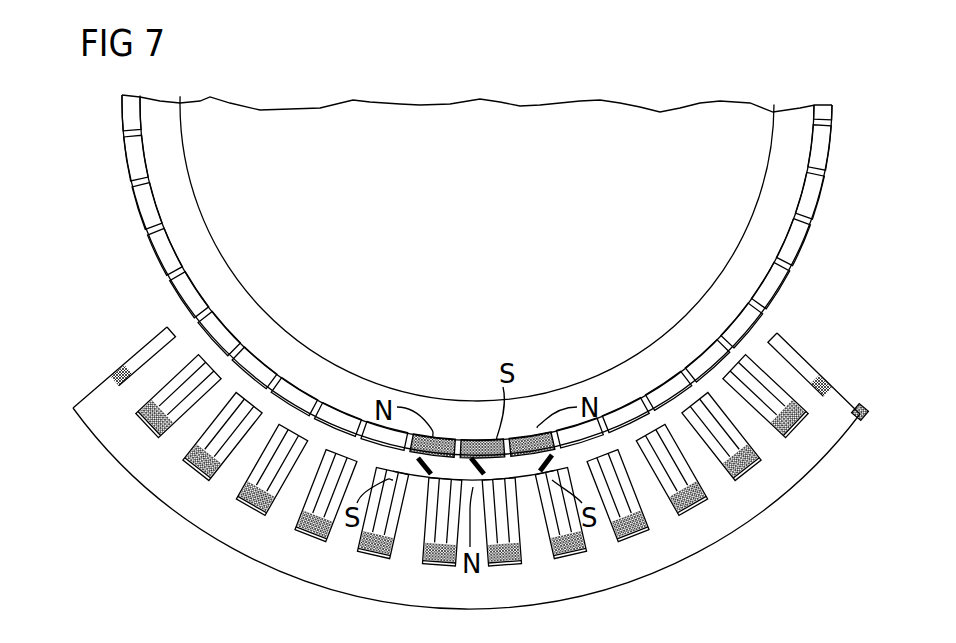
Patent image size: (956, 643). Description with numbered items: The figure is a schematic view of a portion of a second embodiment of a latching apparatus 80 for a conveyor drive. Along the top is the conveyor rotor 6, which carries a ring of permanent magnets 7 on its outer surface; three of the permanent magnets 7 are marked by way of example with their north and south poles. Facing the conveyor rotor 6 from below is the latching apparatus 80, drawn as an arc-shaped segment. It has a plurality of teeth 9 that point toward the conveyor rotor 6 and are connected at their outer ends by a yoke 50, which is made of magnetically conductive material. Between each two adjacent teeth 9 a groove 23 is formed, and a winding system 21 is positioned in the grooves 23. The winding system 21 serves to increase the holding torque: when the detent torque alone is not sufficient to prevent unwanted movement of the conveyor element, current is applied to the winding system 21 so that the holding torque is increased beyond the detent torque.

The conveyor rotor 6 is at (798, 145).
The permanent magnets 7 is at (803, 237).
The teeth 9 is at (757, 438).
The winding system 21 is at (645, 527).
The groove 23 is at (750, 470).
The yoke 50 is at (482, 471).
The latching apparatus 80 is at (865, 417).